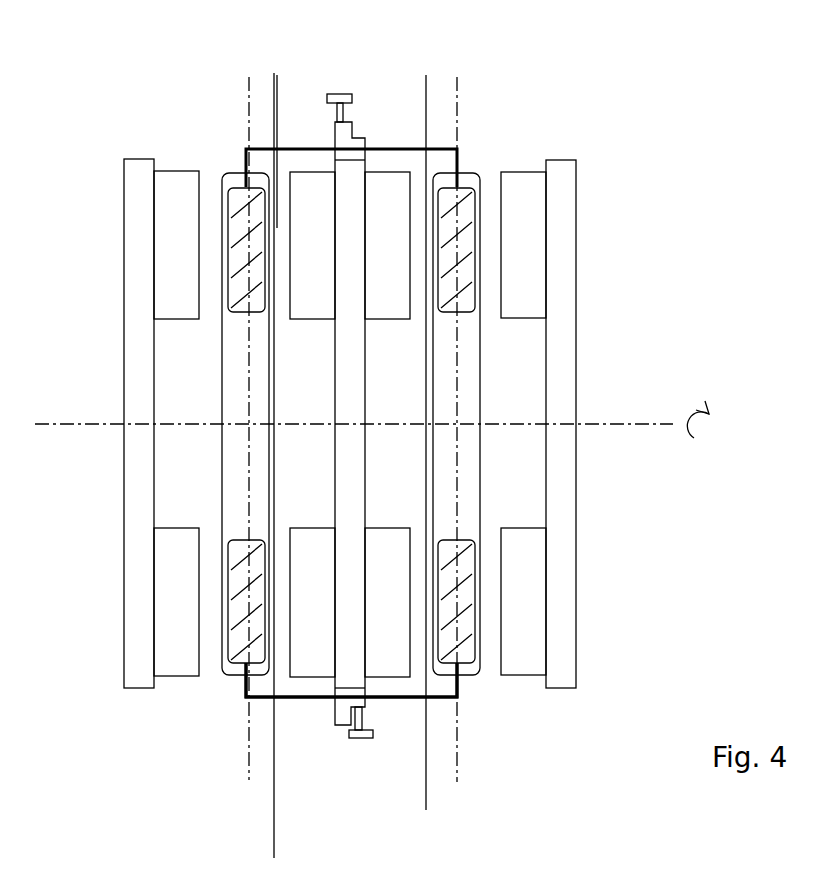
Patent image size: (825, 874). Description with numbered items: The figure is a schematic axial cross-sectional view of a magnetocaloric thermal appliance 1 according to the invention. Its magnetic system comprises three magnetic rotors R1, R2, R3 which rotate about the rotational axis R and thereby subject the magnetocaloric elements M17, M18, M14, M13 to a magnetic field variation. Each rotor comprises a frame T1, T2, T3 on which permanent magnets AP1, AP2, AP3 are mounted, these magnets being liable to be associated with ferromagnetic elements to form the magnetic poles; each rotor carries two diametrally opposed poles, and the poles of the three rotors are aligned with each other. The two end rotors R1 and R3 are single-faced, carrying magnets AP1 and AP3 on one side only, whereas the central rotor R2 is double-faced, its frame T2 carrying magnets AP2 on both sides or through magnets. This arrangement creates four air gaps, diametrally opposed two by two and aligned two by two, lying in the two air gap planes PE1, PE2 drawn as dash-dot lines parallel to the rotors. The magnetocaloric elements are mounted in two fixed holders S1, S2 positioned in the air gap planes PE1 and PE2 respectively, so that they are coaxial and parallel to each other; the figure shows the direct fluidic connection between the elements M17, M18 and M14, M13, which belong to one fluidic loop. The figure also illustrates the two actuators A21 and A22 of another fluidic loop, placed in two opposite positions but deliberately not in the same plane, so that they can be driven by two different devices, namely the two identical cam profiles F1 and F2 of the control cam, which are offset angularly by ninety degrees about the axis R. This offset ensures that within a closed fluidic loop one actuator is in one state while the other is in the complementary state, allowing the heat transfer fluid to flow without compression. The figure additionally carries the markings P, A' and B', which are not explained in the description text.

The magnetocaloric thermal appliance 1 is at (748, 142).
The pressing direction P is at (210, 168).
The air gap plane PE1 is at (249, 104).
The air gap plane PE2 is at (457, 107).
The actuator A21 is at (341, 93).
The actuator A22 is at (360, 738).
The permanent magnets AP1 is at (178, 183).
The permanent magnets AP2 is at (313, 182).
The permanent magnets AP3 is at (517, 180).
The frame T1 is at (140, 398).
The frame T2 is at (350, 404).
The frame T3 is at (548, 400).
The magnetocaloric element M17 is at (243, 224).
The magnetocaloric element M18 is at (462, 236).
The magnetocaloric element M14 is at (243, 598).
The magnetocaloric element M13 is at (462, 598).
The fixed holder S1 is at (258, 484).
The fixed holder S2 is at (471, 488).
The cam profile F1 is at (347, 710).
The cam profile F2 is at (362, 705).
The rotational axis R is at (707, 428).
The magnetic rotor R1 is at (139, 708).
The magnetic rotor R2 is at (323, 728).
The magnetic rotor R3 is at (559, 708).
The section A' is at (308, 853).
The section B' is at (397, 796).